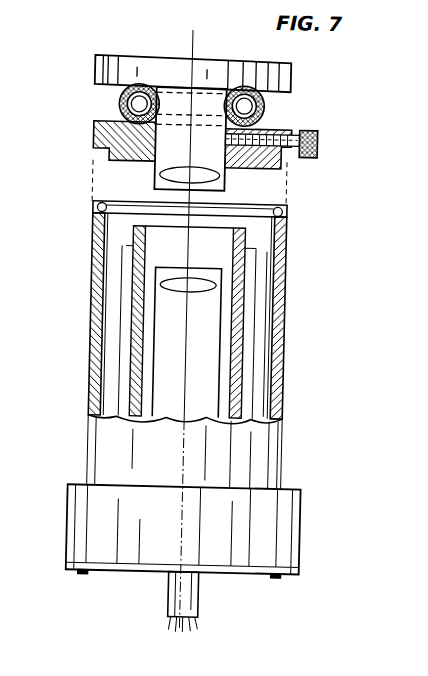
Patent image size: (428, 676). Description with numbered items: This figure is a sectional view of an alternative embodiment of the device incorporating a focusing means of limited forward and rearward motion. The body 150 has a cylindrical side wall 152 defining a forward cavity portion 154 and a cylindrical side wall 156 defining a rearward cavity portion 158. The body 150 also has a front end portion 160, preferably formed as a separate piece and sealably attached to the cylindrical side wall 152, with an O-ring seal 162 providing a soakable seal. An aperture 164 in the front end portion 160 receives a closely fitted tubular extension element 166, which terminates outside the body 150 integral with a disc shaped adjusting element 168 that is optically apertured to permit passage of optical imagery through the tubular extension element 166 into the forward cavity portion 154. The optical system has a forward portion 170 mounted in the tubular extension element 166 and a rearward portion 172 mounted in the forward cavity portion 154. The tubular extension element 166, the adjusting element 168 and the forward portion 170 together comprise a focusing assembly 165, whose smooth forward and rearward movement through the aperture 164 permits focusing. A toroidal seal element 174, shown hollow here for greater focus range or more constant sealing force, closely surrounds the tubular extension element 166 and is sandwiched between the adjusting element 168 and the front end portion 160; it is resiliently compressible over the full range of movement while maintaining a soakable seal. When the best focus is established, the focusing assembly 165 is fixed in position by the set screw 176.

The body 150 is at (292, 347).
The cylindrical side wall 152 is at (284, 393).
The forward cavity portion 154 is at (268, 296).
The cylindrical side wall 156 is at (302, 513).
The rearward cavity portion 158 is at (276, 547).
The front end portion 160 is at (96, 136).
The O-ring seal 162 is at (290, 213).
The aperture 164 is at (150, 170).
The focusing assembly 165 is at (126, 52).
The tubular extension element 166 is at (228, 190).
The disc shaped adjusting element 168 is at (246, 68).
The forward portion of the optical system 170 is at (160, 181).
The rearward portion of the optical system 172 is at (160, 292).
The toroidal seal element 174 is at (263, 112).
The set screw 176 is at (320, 141).